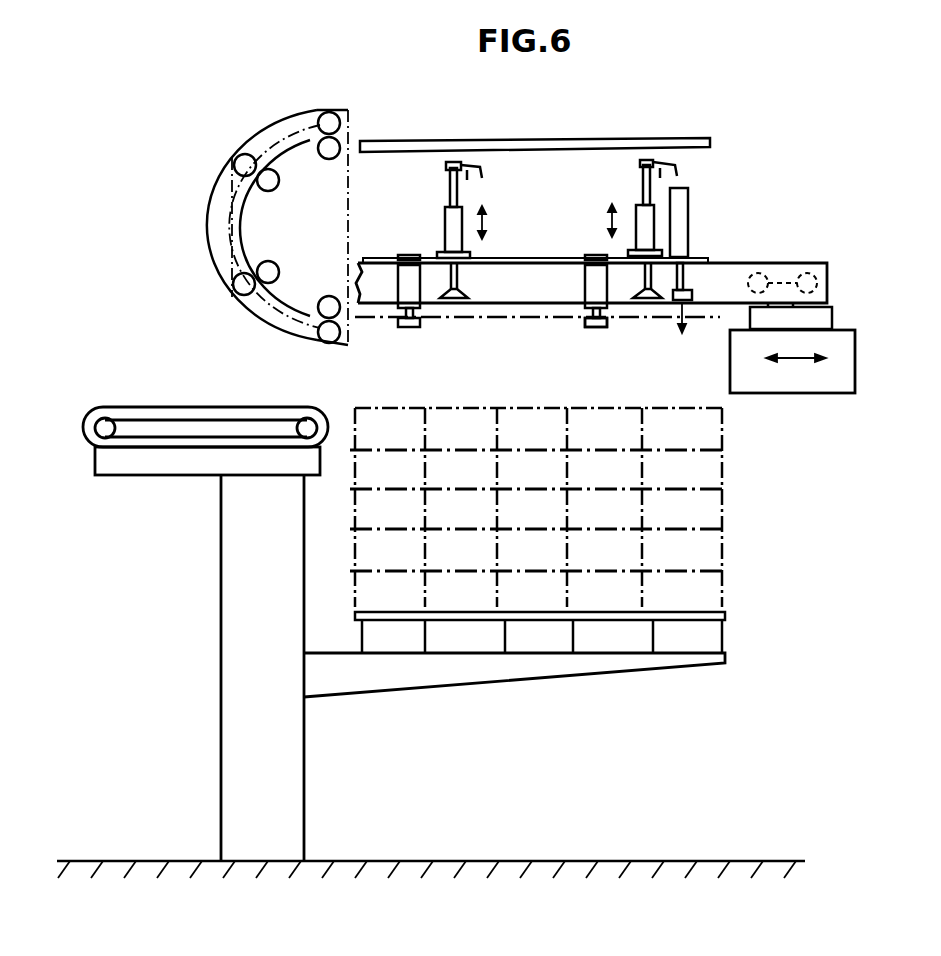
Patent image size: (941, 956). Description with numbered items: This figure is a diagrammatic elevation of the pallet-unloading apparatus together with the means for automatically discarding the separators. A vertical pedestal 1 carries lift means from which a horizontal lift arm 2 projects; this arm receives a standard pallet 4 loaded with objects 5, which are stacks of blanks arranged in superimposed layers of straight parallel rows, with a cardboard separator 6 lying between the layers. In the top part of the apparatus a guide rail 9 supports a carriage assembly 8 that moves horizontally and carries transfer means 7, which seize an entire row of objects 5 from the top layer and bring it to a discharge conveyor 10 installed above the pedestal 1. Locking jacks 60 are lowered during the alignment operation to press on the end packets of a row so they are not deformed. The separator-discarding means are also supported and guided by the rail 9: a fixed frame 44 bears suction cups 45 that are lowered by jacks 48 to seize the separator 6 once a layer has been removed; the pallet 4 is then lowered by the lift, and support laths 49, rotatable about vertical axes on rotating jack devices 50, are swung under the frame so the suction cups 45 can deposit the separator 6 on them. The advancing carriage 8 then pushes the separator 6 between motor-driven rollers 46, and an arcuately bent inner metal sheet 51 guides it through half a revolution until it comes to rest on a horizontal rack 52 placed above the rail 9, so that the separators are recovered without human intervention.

The vertical pedestal 1 is at (230, 672).
The lift arm 2 is at (673, 657).
The pallet 4 is at (695, 631).
The objects 5 is at (688, 437).
The separator 6 is at (722, 440).
The transfer means 7 is at (840, 362).
The carriage assembly 8 is at (803, 307).
The guide rail 9 is at (800, 261).
The discharge conveyor 10 is at (157, 407).
The fixed frame 44 is at (700, 257).
The suction cups 45 is at (458, 300).
The rollers 46 is at (248, 283).
The jacks 48 is at (447, 229).
The support laths 49 is at (598, 328).
The rotating jack devices 50 is at (405, 292).
The arcuately bent inner metal sheet 51 is at (279, 150).
The horizontal rack 52 is at (698, 142).
The locking jacks 60 is at (692, 204).